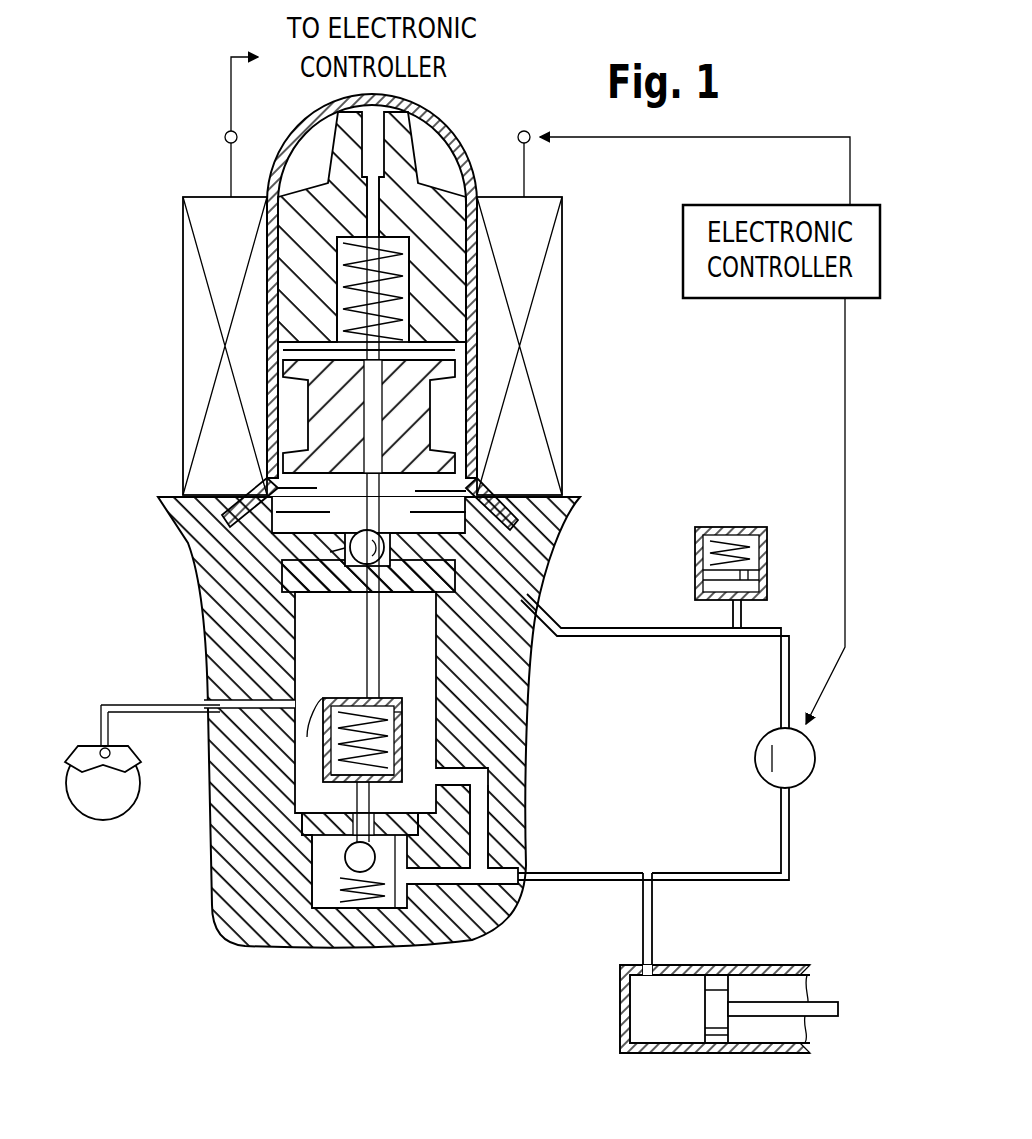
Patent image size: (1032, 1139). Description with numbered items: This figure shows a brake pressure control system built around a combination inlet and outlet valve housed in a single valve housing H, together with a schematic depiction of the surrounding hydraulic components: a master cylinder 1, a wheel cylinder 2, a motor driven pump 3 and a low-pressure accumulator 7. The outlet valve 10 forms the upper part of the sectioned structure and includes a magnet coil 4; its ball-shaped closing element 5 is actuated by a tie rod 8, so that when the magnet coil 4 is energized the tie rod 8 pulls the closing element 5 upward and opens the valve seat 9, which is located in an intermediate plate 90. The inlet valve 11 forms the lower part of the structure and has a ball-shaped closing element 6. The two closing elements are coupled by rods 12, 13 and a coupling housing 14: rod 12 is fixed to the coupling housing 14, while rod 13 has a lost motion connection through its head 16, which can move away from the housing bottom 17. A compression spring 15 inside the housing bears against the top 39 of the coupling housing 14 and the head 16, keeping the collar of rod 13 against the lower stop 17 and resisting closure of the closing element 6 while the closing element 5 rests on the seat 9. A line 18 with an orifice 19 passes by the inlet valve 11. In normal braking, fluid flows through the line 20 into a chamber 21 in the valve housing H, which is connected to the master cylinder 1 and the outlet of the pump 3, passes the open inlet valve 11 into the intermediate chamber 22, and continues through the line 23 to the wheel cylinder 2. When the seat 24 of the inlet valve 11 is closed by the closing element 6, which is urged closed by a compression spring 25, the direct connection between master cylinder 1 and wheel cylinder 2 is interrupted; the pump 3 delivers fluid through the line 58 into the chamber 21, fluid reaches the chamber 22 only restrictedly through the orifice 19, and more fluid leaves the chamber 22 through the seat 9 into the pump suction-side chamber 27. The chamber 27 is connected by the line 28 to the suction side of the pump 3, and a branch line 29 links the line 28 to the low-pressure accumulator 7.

The valve housing H is at (158, 499).
The master cylinder 1 is at (768, 965).
The wheel cylinder 2 is at (92, 748).
The motor driven pump 3 is at (810, 767).
The magnet coil 4 is at (562, 270).
The closing element of the outlet valve 5 is at (387, 545).
The closing element of the inlet valve 6 is at (345, 855).
The low-pressure accumulator 7 is at (767, 542).
The tie rod 8 is at (372, 430).
The valve seat of the outlet valve 9 is at (337, 608).
The outlet valve 10 is at (345, 548).
The inlet valve 11 is at (386, 868).
The rod 12 is at (366, 663).
The rod 13 is at (436, 800).
The coupling housing 14 is at (402, 726).
The compression spring 15 is at (400, 714).
The head 16 is at (398, 758).
The housing bottom 17 is at (340, 790).
The line 18 is at (488, 776).
The orifice 19 is at (488, 845).
The line 20 is at (652, 922).
The chamber 21 is at (330, 888).
The intermediate chamber 22 is at (420, 648).
The line 23 is at (125, 701).
The seat of the inlet valve 24 is at (318, 832).
The compression spring 25 is at (360, 897).
The pump suction-side chamber 27 is at (420, 500).
The line 28 is at (781, 680).
The branch line 29 is at (741, 614).
The top of the coupling housing 39 is at (322, 730).
The line 58 is at (718, 871).
The intermediate plate 90 is at (307, 576).